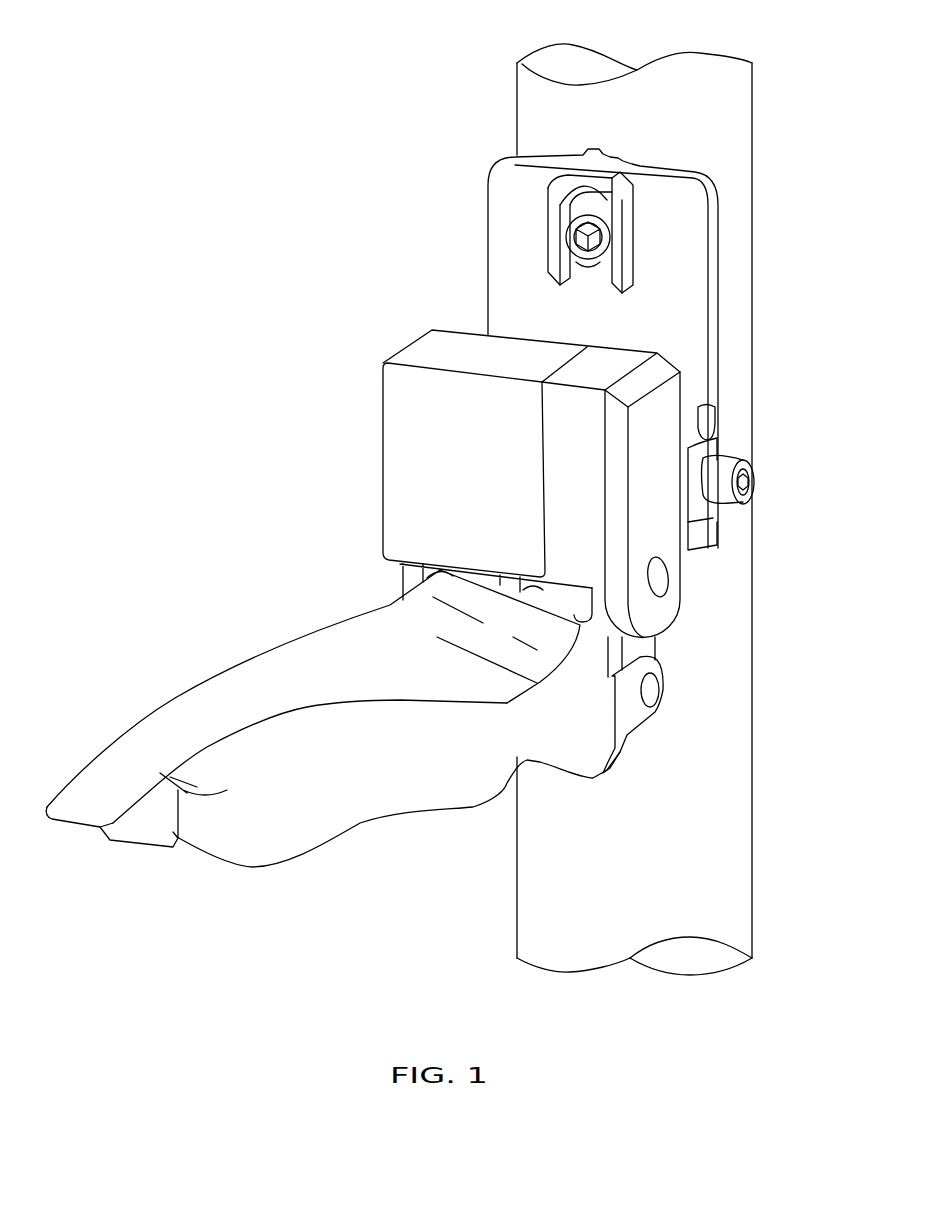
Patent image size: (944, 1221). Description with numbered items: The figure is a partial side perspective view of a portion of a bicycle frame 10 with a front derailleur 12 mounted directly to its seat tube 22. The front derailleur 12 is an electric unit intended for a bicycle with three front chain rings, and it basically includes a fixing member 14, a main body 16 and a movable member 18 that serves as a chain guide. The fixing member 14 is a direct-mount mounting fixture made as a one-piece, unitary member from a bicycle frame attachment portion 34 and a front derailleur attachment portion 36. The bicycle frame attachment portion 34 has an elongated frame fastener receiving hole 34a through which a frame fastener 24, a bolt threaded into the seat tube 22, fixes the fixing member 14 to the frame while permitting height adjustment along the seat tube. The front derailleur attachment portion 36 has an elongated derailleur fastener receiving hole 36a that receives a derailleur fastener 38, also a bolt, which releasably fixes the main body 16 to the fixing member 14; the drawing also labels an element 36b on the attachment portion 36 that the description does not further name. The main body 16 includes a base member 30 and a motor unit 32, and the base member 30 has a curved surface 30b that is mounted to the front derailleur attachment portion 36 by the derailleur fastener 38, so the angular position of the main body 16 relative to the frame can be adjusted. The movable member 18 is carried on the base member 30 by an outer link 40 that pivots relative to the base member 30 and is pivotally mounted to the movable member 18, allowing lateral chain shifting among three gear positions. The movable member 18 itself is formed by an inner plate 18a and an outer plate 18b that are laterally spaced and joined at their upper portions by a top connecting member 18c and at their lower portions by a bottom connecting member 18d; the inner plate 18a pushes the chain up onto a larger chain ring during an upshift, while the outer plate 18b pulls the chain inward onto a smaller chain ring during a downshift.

The bicycle frame 10 is at (510, 104).
The front derailleur 12 is at (389, 329).
The fixing member 14 is at (480, 249).
The main body 16 is at (305, 500).
The movable member 18 is at (169, 696).
The inner plate 18a is at (370, 788).
The outer plate 18b is at (247, 710).
The top connecting member 18c is at (540, 632).
The bottom connecting member 18d is at (130, 820).
The seat tube 22 is at (753, 105).
The frame fastener 24 is at (597, 258).
The base member 30 is at (396, 578).
The curved surface 30b is at (697, 530).
The motor unit 32 is at (376, 512).
The bicycle frame attachment portion 34 is at (726, 252).
The frame fastener receiving hole 34a is at (583, 202).
The front derailleur attachment portion 36 is at (736, 427).
The derailleur fastener receiving hole 36a is at (727, 446).
The hinge boss 36b is at (707, 400).
The derailleur fastener 38 is at (752, 497).
The outer link 40 is at (657, 648).